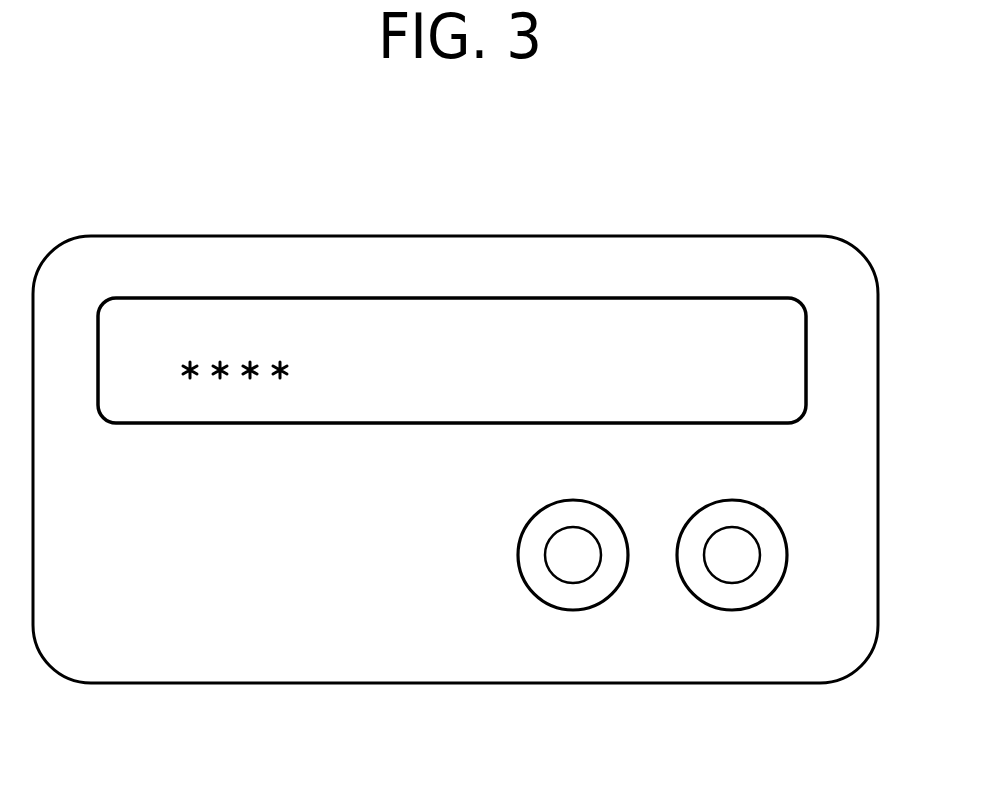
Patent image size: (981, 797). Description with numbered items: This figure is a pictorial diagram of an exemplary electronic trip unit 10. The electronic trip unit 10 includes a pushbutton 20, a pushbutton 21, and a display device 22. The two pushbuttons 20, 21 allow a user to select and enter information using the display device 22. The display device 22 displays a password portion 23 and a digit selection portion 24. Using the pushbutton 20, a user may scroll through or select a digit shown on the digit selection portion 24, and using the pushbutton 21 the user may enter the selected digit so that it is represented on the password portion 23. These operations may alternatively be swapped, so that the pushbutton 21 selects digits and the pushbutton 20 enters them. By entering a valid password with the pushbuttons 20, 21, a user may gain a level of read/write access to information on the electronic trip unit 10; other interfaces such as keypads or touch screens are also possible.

The electronic trip unit 10 is at (866, 656).
The pushbutton 20 is at (617, 518).
The pushbutton 21 is at (777, 518).
The display device 22 is at (677, 298).
The password portion 23 is at (197, 400).
The digit selection portion 24 is at (552, 401).